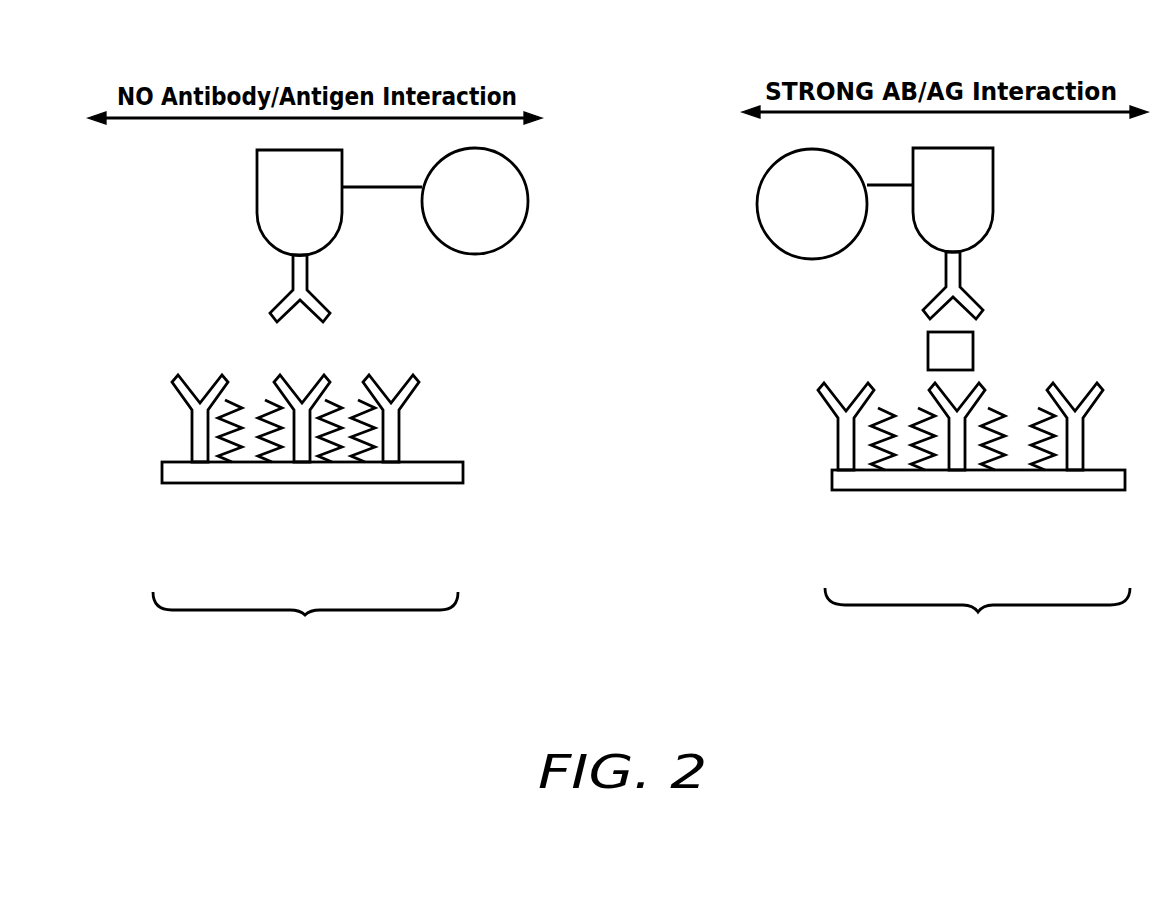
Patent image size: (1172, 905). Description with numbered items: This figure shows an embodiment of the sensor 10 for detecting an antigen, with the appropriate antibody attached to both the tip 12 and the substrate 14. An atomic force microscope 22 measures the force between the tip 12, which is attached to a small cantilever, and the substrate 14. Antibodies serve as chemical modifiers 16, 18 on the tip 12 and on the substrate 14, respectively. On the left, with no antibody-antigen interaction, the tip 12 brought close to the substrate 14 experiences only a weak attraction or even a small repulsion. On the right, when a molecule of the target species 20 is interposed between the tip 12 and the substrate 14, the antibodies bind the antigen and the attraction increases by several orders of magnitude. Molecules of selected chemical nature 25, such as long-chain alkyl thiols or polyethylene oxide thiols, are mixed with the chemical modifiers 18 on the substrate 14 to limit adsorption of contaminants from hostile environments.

The sensor 10 is at (641, 621).
The tip 12 is at (284, 213).
The substrate 14 is at (462, 476).
The chemical modifier on the tip 16 is at (308, 277).
The chemical modifier on the substrate 18 is at (399, 425).
The target species 20 is at (927, 350).
The atomic force microscope 22 is at (490, 216).
The molecules of selected chemical nature 25 is at (267, 400).